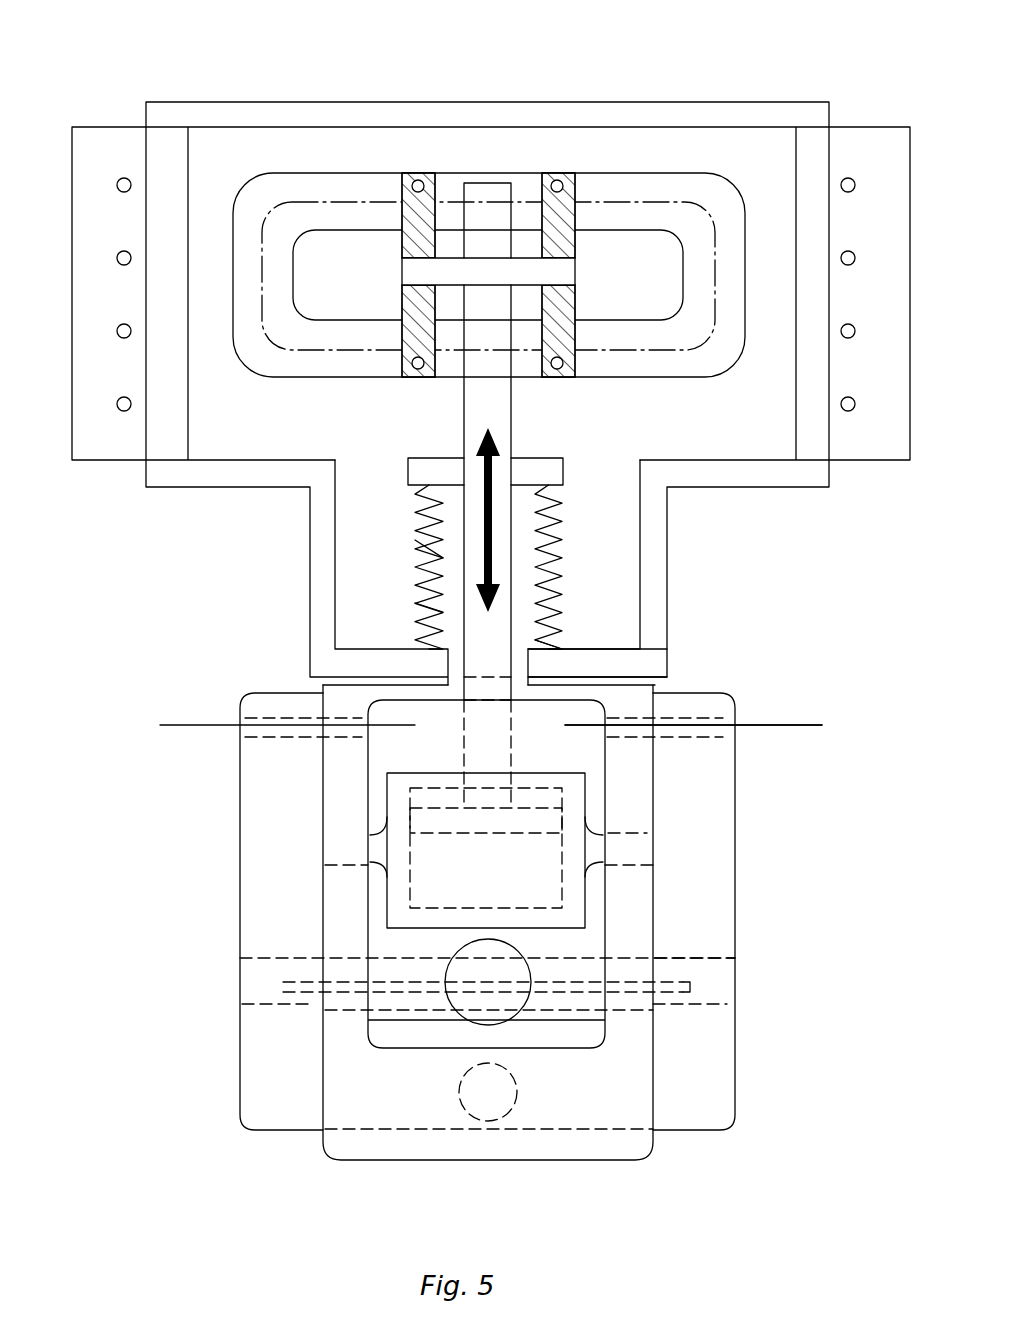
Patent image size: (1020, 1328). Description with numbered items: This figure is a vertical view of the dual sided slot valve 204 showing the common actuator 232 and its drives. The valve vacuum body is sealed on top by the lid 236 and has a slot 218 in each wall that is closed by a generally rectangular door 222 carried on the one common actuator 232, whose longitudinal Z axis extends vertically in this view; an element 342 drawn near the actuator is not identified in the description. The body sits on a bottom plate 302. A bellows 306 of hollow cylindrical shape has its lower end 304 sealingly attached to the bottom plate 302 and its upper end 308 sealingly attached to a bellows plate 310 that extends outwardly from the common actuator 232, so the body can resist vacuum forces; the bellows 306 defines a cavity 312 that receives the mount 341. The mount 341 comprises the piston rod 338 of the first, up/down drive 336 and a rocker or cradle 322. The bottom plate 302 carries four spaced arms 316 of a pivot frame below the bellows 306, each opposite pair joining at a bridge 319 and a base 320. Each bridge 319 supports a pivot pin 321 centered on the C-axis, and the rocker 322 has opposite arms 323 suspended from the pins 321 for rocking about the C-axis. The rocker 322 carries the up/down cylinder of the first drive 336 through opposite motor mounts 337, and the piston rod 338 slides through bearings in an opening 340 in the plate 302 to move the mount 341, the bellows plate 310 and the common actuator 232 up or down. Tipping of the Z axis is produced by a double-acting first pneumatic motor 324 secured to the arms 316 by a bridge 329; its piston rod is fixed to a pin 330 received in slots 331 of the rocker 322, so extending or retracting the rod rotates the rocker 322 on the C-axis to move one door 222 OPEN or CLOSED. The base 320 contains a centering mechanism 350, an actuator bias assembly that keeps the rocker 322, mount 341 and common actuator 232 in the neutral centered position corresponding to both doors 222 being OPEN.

The valve 204 is at (157, 70).
The lid 236 is at (262, 112).
The cross member 342 is at (482, 270).
The door 222 is at (618, 183).
The slot 218 is at (678, 202).
The common actuator 232 is at (520, 426).
The bellows plate 310 is at (423, 475).
The mount 341 is at (506, 510).
The upper end of bellows 308 is at (418, 508).
The bellows 306 is at (402, 548).
The lower end of bellows 304 is at (417, 604).
The cavity 312 is at (373, 680).
The opening 340 is at (532, 660).
The bottom plate 302 is at (590, 660).
The Z axis Z is at (477, 552).
The C-axis C is at (188, 722).
The pivot pin 321 is at (287, 745).
The bridge 319 is at (486, 831).
The arms 316 is at (630, 748).
The rocker 322 is at (236, 789).
The motor mounts 337 is at (358, 835).
The piston rod 338 is at (490, 740).
The first drive 336 is at (382, 901).
The opposite arms 323 is at (268, 903).
The bridge 329 is at (245, 958).
The pin 330 is at (245, 988).
The slots 331 is at (700, 958).
The first pneumatic motor 324 is at (443, 998).
The centering mechanism 350 is at (530, 1095).
The base 320 is at (360, 1145).